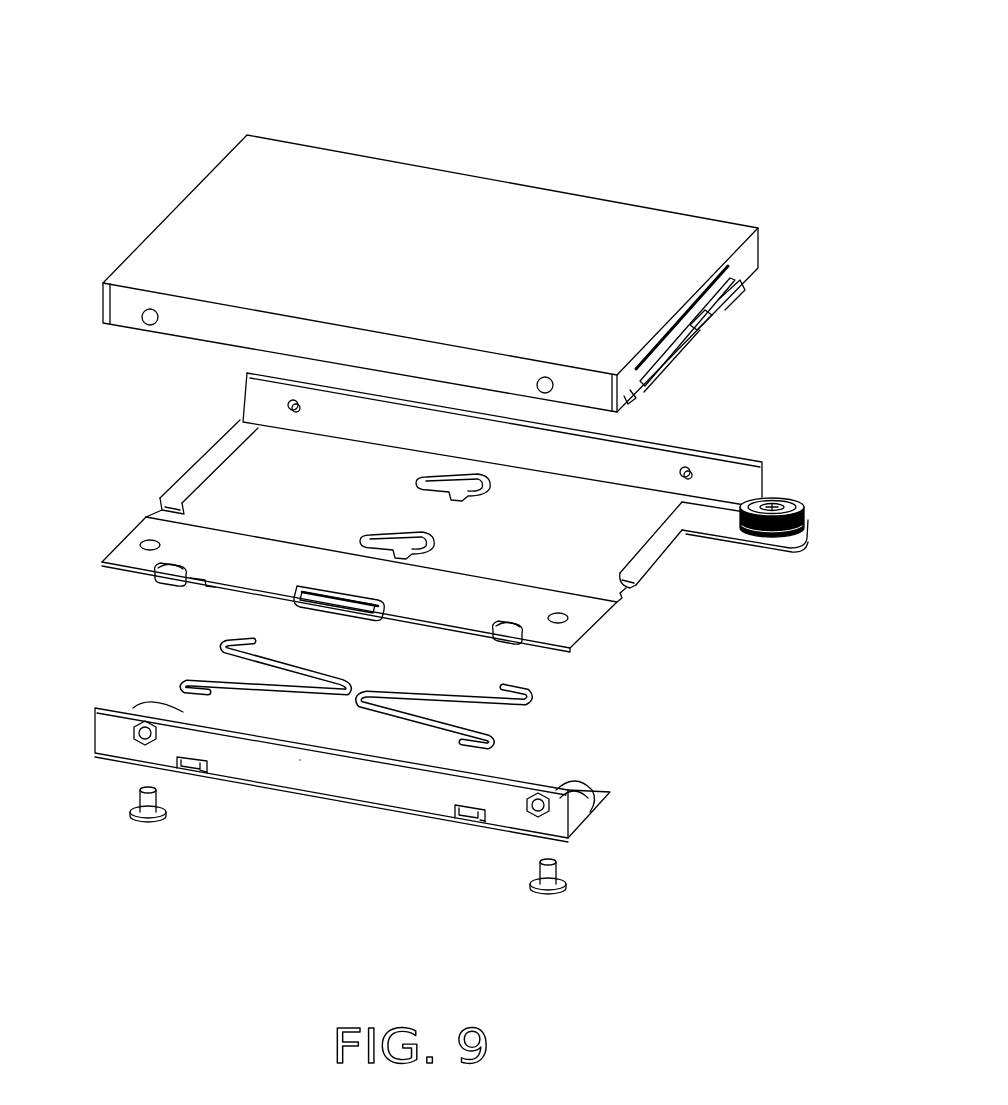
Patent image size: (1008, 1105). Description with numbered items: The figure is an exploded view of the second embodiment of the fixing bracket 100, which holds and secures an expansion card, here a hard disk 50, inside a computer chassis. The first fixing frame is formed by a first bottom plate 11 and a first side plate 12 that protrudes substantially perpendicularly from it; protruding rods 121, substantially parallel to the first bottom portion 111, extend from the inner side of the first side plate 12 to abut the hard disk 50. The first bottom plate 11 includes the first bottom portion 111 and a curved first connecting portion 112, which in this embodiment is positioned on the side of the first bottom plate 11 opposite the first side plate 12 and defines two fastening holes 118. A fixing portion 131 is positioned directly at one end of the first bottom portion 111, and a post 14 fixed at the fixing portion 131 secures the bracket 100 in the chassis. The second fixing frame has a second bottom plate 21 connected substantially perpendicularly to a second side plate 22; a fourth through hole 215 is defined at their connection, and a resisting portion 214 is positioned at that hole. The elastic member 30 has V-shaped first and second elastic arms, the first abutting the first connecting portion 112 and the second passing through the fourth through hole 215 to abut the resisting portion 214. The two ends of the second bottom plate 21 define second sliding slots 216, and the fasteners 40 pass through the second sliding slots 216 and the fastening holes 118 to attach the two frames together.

The fixing bracket 100 is at (513, 38).
The hard disk 50 is at (590, 220).
The first side plate 12 is at (538, 439).
The protruding rod 121 is at (690, 464).
The post 14 is at (802, 507).
The first bottom plate 11 is at (427, 555).
The fastening hole 118 is at (147, 540).
The fixing portion 131 is at (717, 515).
The first bottom portion 111 is at (590, 577).
The first connecting portion 112 is at (580, 607).
The elastic member 30 is at (287, 663).
The second bottom plate 21 is at (369, 802).
The second side plate 22 is at (510, 815).
The resisting portion 214 is at (190, 766).
The fourth through hole 215 is at (199, 781).
The second sliding slot 216 is at (584, 787).
The fastener 40 is at (565, 868).